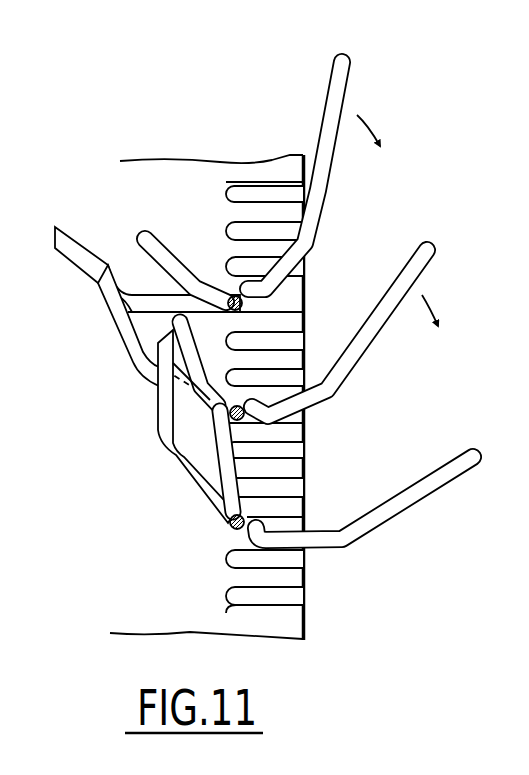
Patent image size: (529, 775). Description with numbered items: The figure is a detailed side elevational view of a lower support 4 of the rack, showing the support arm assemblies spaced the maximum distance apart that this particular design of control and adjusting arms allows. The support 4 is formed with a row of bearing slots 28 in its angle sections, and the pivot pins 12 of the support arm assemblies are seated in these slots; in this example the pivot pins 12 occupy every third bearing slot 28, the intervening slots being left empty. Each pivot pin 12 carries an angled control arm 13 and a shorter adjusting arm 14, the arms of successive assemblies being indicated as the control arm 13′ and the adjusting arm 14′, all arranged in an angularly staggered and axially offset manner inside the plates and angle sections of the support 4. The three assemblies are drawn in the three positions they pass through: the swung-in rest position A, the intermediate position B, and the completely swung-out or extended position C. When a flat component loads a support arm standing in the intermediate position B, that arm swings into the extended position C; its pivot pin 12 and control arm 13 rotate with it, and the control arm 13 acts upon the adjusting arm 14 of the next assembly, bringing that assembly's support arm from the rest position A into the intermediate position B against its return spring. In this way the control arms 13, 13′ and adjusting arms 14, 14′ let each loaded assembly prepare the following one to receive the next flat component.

The lower support 4 is at (207, 373).
The bearing slot 28 is at (238, 222).
The pivot pin 12 is at (230, 526).
The control arm 13 is at (79, 247).
The control arm 13′ is at (173, 455).
The adjusting arm 14 is at (149, 230).
The adjusting arm 14′ is at (220, 470).
The rest position A is at (350, 64).
The intermediate position B is at (436, 260).
The extended position C is at (474, 458).